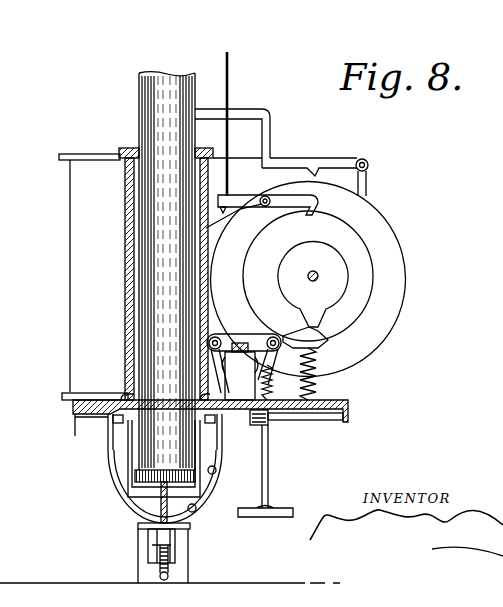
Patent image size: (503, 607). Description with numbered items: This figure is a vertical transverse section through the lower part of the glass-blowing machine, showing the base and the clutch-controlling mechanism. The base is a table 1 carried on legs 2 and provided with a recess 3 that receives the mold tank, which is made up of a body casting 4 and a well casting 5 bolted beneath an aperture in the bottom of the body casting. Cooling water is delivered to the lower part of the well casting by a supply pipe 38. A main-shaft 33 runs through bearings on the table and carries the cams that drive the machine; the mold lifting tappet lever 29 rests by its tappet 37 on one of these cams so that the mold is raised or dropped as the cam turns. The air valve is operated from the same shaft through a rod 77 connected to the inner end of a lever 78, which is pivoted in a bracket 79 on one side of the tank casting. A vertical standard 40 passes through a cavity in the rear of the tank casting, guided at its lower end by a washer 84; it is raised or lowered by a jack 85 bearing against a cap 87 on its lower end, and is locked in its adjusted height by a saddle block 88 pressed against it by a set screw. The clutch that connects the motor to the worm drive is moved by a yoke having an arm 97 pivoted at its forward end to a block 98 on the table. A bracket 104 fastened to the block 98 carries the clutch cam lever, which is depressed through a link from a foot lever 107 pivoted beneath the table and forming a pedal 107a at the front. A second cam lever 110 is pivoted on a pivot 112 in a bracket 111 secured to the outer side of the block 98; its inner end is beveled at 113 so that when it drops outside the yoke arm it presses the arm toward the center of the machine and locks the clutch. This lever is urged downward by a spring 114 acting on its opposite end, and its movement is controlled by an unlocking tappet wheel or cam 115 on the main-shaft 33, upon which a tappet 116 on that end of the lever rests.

The table 1 is at (336, 402).
The legs 2 is at (140, 565).
The recess 3 is at (108, 417).
The body casting 4 is at (70, 208).
The well casting 5 is at (150, 540).
The mold lifting tappet lever 29 is at (273, 142).
The main-shaft 33 is at (313, 284).
The tappet 37 is at (319, 170).
The supply pipe 38 is at (178, 559).
The standard 40 is at (141, 104).
The rod 77 is at (231, 78).
The lever 78 is at (233, 196).
The bracket 79 is at (228, 218).
The washer 84 is at (126, 390).
The jack 85 is at (160, 512).
The cap 87 is at (137, 476).
The saddle block 88 is at (128, 455).
The arm 97 is at (238, 361).
The block 98 is at (240, 376).
The bracket 104 is at (222, 416).
The foot lever 107 is at (272, 446).
The pedal 107a is at (278, 508).
The second cam lever 110 is at (290, 348).
The bracket 111 is at (266, 334).
The pivot 112 is at (276, 337).
The beveled end 113 is at (233, 336).
The spring 114 is at (313, 364).
The unlocking tappet wheel or cam 115 is at (348, 274).
The tappet 116 is at (320, 337).